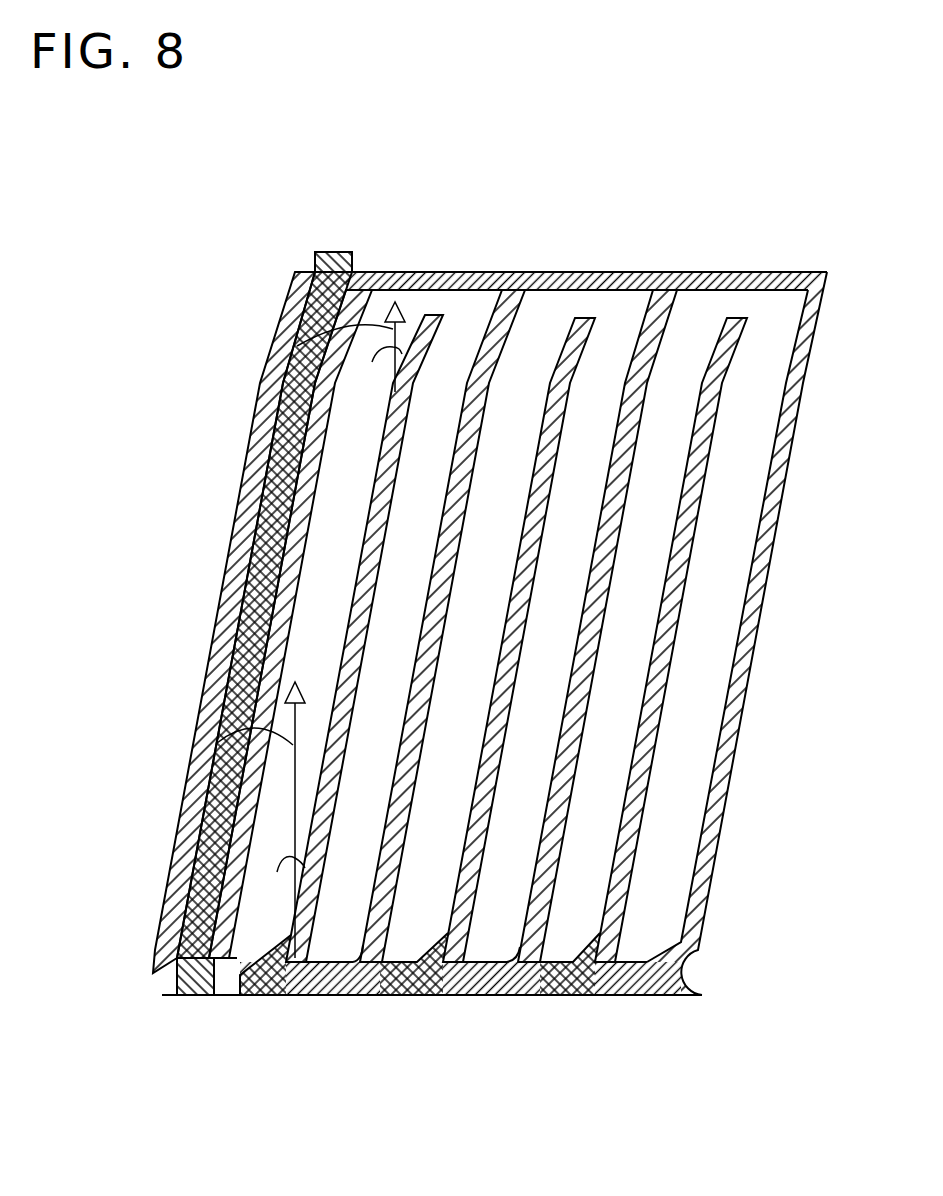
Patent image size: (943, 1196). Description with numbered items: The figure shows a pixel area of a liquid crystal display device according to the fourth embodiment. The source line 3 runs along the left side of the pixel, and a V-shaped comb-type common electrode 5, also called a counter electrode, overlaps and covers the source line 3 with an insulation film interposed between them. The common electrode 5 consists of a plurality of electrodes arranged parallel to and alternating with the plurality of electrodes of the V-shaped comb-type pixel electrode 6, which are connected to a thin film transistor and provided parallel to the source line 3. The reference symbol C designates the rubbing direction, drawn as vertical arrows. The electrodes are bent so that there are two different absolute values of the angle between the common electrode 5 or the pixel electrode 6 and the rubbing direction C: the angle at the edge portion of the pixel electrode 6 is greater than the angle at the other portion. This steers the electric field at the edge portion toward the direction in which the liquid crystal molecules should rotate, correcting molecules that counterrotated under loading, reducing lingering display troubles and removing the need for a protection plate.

The source line 3 is at (249, 449).
The common electrode 5 is at (319, 468).
The pixel electrode 6 is at (394, 478).
The rubbing direction C is at (297, 346).